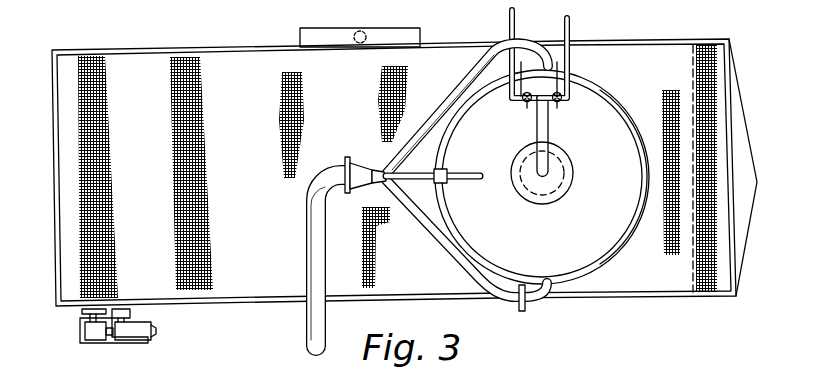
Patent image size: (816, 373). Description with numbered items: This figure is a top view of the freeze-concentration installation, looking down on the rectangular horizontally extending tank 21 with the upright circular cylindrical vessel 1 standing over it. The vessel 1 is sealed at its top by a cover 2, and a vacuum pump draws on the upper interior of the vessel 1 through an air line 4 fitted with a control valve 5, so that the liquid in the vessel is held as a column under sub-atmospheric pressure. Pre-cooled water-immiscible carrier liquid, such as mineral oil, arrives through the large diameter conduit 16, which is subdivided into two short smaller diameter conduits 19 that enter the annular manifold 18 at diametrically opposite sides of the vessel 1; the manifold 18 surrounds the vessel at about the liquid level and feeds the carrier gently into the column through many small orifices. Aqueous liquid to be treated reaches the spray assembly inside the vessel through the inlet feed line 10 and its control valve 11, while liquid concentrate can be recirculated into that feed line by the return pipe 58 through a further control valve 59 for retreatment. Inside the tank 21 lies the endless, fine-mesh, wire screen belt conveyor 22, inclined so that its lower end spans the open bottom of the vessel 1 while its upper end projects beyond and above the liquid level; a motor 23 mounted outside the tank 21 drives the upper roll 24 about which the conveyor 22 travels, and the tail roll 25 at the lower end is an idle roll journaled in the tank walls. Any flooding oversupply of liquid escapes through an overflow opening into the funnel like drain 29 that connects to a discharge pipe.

The vessel 1 is at (616, 108).
The cover 2 is at (562, 178).
The air line 4 is at (456, 174).
The control valve 5 is at (444, 185).
The inlet feed line 10 is at (571, 25).
The control valve 11 is at (557, 103).
The conduit 16 is at (322, 278).
The annular manifold 18 is at (615, 252).
The conduits 19 is at (438, 105).
The tank 21 is at (128, 50).
The belt conveyor 22 is at (225, 72).
The motor 23 is at (135, 337).
The upper roll 24 is at (85, 307).
The tail roll 25 is at (712, 296).
The funnel like drain 29 is at (326, 34).
The return pipe 58 is at (508, 22).
The control valve 59 is at (527, 103).